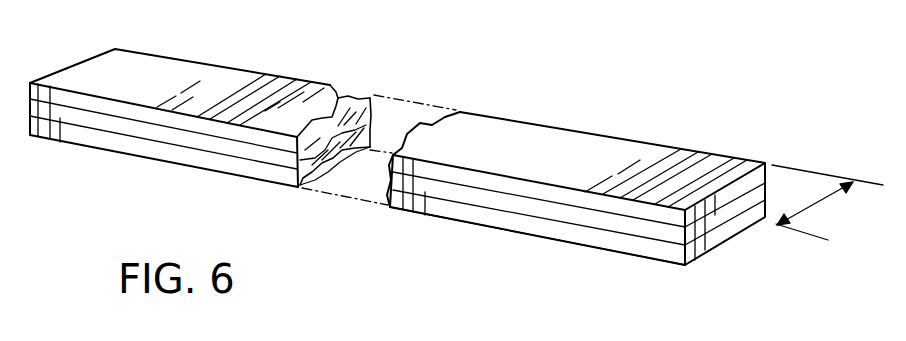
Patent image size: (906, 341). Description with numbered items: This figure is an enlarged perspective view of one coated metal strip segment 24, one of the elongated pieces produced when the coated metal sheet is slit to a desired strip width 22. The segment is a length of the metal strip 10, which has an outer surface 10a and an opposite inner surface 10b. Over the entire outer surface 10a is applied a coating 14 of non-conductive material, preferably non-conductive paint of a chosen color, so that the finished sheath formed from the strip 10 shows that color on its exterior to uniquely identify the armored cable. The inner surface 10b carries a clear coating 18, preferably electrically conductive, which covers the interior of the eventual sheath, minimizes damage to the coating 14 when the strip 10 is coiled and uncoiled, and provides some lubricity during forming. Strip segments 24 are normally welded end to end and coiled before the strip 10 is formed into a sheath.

The metal strip 10 is at (167, 135).
The outer surface 10a is at (342, 103).
The inner surface 10b is at (300, 140).
The coating of non-conductive material 14 is at (173, 75).
The clear coating 18 is at (502, 220).
The strip width 22 is at (808, 228).
The coated metal strip segment 24 is at (490, 92).